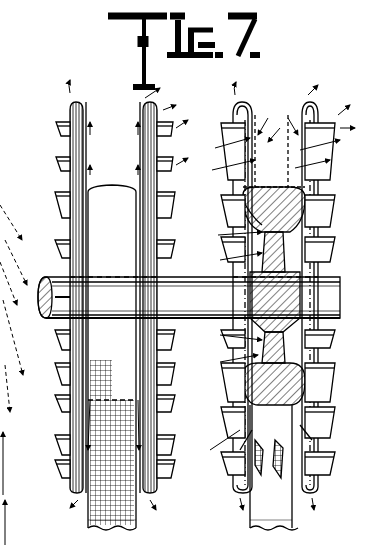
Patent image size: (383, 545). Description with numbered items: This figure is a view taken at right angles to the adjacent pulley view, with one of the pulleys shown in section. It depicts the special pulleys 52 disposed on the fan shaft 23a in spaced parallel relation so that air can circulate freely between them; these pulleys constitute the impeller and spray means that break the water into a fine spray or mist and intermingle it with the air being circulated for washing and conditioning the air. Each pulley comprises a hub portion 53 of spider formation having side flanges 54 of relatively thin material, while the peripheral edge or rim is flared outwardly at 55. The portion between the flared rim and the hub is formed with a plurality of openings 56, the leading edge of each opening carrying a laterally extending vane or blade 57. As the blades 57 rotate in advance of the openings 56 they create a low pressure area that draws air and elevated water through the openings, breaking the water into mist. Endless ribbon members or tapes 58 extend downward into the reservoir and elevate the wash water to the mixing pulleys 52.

The fan shaft 23a is at (63, 318).
The pulleys 52 is at (275, 186).
The hub portion 53 is at (248, 216).
The side flanges 54 is at (143, 141).
The flared rim 55 is at (143, 108).
The openings 56 is at (245, 437).
The vane or blade 57 is at (62, 165).
The endless ribbon members or tapes 58 is at (112, 512).